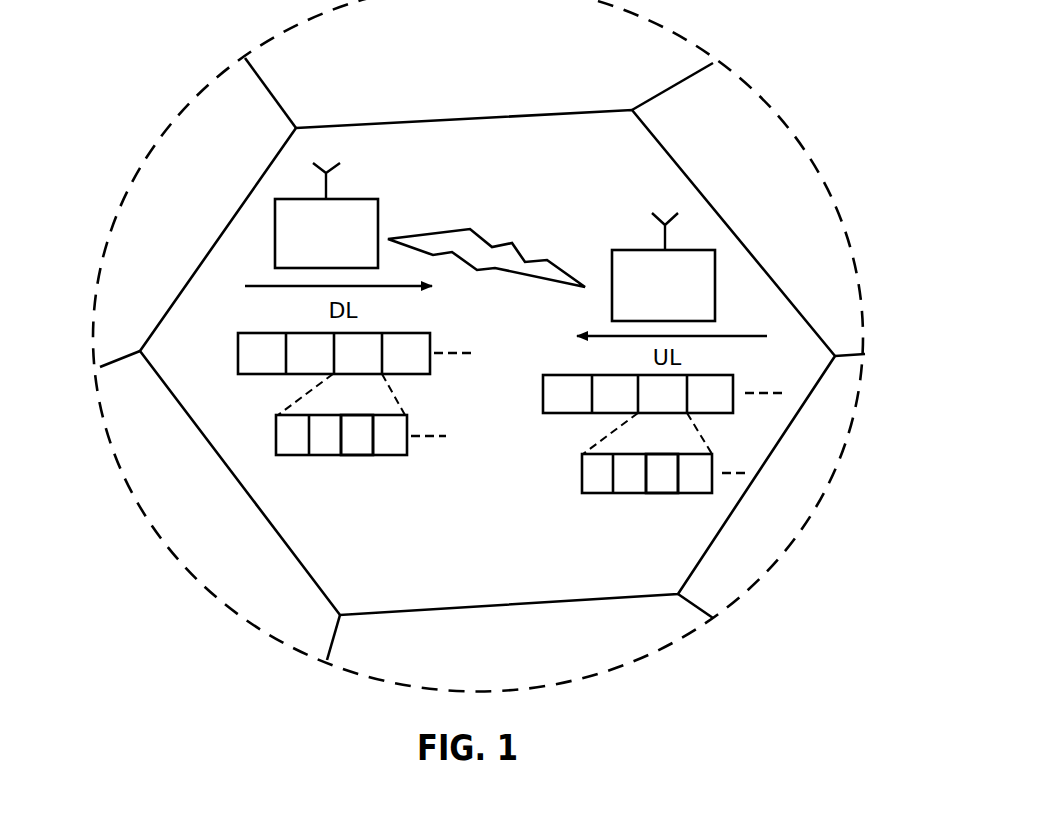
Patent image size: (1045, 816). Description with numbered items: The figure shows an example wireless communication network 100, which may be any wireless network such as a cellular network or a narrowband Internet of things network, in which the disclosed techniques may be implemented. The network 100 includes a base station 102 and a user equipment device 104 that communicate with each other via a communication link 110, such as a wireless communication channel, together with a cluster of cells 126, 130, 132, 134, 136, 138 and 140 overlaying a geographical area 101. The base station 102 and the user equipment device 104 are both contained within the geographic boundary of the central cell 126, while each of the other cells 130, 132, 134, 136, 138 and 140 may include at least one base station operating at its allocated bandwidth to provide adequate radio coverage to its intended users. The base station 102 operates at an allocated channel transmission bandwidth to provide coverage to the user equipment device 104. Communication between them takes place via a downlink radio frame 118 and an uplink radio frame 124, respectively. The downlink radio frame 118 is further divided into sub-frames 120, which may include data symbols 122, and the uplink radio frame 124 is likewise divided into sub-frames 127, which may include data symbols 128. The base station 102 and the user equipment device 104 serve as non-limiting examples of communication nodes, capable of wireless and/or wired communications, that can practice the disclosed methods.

The wireless communication network 100 is at (888, 97).
The geographical area 101 is at (113, 217).
The base station 102 is at (305, 260).
The user equipment device 104 is at (663, 267).
The communication link 110 is at (482, 237).
The downlink radio frame 118 is at (243, 357).
The sub-frame 120 is at (277, 443).
The data symbol 122 is at (360, 451).
The uplink radio frame 124 is at (550, 395).
The cell 126 is at (491, 580).
The sub-frame 127 is at (582, 487).
The data symbol 128 is at (665, 490).
The cell 130 is at (164, 219).
The cell 132 is at (469, 74).
The cell 134 is at (756, 212).
The cell 136 is at (769, 515).
The cell 138 is at (504, 659).
The cell 140 is at (182, 525).